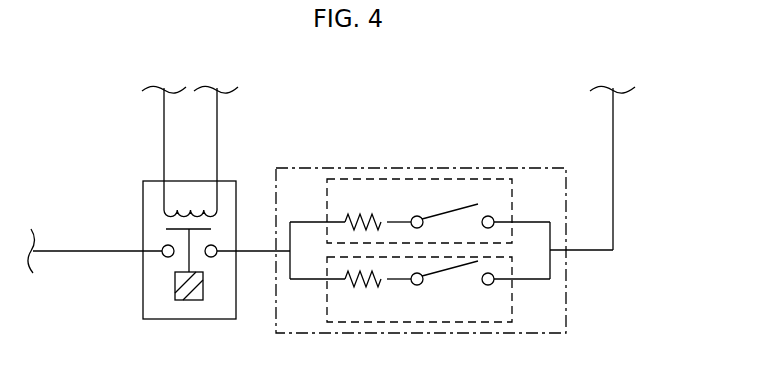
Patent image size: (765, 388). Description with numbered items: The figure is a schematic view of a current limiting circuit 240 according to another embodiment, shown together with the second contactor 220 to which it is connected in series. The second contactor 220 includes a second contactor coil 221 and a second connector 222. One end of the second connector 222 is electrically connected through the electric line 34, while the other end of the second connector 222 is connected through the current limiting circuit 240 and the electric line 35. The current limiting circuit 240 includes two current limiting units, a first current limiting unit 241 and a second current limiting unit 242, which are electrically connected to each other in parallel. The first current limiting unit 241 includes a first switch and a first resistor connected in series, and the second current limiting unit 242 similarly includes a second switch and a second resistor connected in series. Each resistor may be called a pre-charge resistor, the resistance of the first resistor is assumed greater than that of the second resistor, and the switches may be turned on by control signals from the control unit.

The electric line 34 is at (98, 253).
The electric line 35 is at (613, 203).
The second contactor 220 is at (143, 192).
The second contactor coil 221 is at (189, 207).
The second connector 222 is at (173, 230).
The current limiting circuit 240 is at (420, 169).
The first current limiting unit 241 is at (488, 178).
The second current limiting unit 242 is at (488, 322).